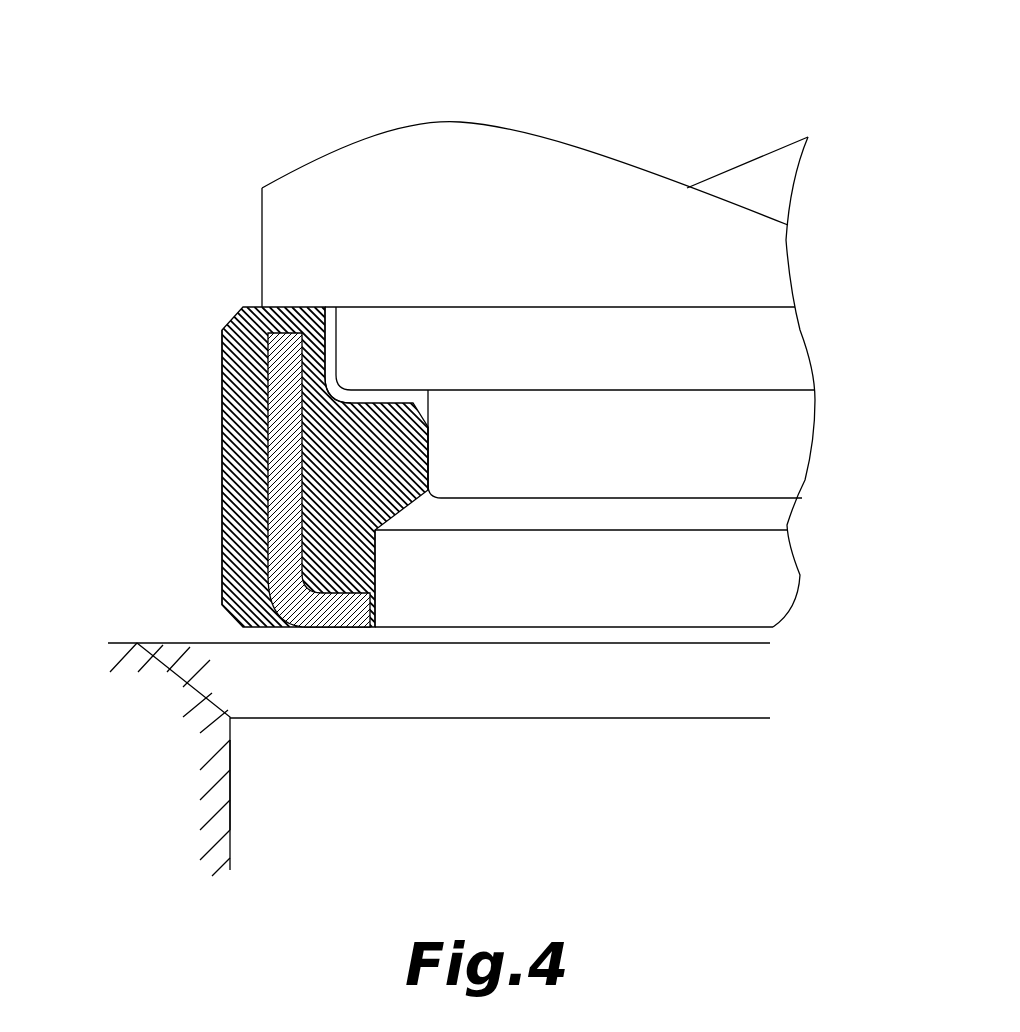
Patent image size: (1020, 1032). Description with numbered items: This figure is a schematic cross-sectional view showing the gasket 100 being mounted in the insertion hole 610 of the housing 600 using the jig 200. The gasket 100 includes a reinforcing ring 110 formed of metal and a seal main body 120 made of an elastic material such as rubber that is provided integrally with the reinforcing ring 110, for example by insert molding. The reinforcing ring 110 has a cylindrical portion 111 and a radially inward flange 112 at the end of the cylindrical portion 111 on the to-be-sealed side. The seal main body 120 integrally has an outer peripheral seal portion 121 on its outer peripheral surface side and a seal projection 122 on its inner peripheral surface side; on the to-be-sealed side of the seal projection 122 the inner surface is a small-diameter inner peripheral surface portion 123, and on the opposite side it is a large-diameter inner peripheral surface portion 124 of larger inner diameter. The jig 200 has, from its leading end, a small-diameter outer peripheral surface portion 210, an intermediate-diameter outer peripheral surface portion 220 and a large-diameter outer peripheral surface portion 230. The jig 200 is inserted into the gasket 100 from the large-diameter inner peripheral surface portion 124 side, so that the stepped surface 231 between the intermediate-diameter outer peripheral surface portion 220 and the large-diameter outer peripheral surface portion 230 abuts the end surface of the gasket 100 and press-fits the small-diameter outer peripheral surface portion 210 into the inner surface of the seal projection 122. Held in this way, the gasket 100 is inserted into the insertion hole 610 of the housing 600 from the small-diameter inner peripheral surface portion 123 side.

The gasket 100 is at (190, 368).
The reinforcing ring 110 is at (419, 516).
The cylindrical portion 111 is at (258, 410).
The radially inward flange 112 is at (363, 620).
The seal main body 120 is at (398, 552).
The outer peripheral seal portion 121 is at (262, 550).
The seal projection 122 is at (428, 443).
The small-diameter inner peripheral surface portion 123 is at (375, 588).
The large-diameter inner peripheral surface portion 124 is at (337, 342).
The jig 200 is at (640, 125).
The small-diameter outer peripheral surface portion 210 is at (733, 448).
The intermediate-diameter outer peripheral surface portion 220 is at (733, 353).
The large-diameter outer peripheral surface portion 230 is at (733, 278).
The stepped surface 231 is at (225, 323).
The housing 600 is at (436, 759).
The insertion hole 610 is at (230, 780).